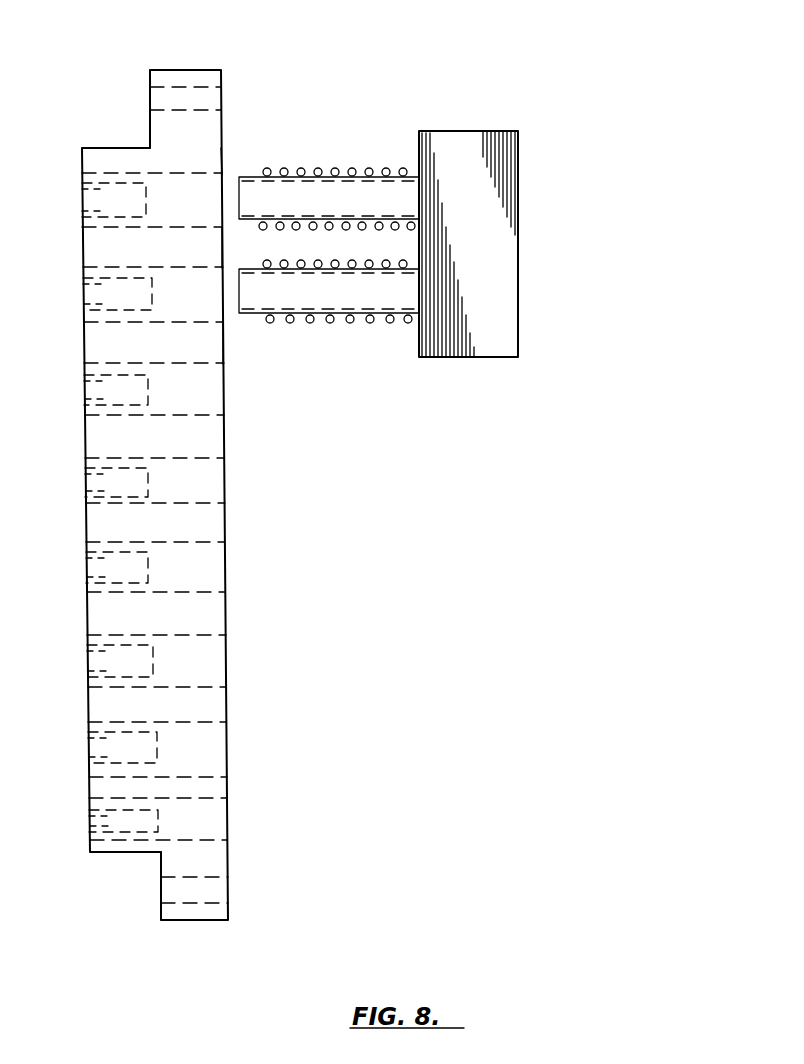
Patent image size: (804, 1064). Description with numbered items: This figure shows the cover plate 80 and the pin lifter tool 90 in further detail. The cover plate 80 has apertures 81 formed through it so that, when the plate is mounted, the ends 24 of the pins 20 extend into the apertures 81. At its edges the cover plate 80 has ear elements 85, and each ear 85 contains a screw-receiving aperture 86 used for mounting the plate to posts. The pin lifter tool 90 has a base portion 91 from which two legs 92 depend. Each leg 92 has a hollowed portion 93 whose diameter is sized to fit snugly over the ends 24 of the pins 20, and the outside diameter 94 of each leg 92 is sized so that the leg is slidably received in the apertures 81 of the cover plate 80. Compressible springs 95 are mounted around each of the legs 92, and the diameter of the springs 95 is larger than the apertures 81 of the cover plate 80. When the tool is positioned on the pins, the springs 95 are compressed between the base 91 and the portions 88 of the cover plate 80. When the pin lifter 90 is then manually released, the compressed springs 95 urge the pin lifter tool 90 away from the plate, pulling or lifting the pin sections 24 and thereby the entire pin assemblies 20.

The cover plate 80 is at (147, 66).
The ear element 85 is at (222, 70).
The screw-receiving aperture 86 is at (208, 110).
The aperture 81 is at (174, 176).
The pin 20 is at (95, 199).
The pin end 24 is at (118, 198).
The portion of the cover plate 88 is at (222, 172).
The pin lifter tool 90 is at (455, 105).
The base portion 91 is at (518, 255).
The leg 92 is at (239, 177).
The hollowed portion 93 is at (296, 182).
The outside diameter 94 is at (340, 168).
The compressible spring 95 is at (376, 168).